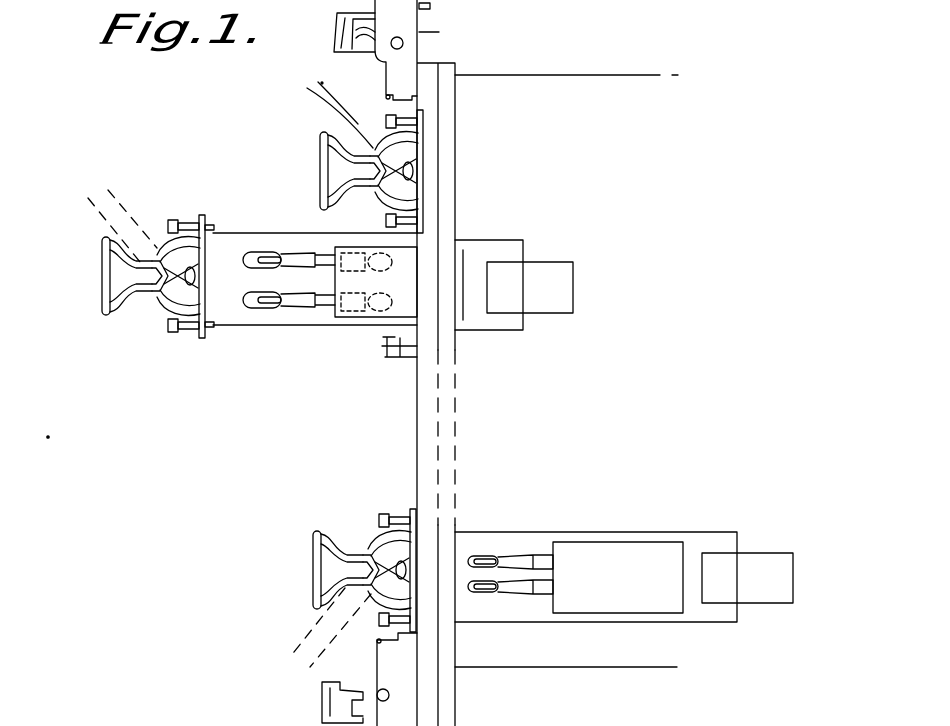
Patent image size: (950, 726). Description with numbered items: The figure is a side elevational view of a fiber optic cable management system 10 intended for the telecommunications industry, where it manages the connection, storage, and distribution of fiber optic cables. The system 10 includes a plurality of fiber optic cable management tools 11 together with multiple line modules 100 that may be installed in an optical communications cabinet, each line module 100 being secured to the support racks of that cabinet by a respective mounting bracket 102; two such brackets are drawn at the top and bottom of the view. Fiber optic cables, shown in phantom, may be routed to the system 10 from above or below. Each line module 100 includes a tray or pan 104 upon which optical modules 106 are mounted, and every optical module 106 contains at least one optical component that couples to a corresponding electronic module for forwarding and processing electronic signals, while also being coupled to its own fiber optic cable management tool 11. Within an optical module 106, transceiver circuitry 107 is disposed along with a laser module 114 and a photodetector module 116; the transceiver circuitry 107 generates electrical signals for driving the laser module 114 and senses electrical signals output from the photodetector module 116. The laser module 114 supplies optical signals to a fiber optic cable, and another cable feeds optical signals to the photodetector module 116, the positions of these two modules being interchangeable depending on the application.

The fiber optic cable management system 10 is at (227, 374).
The fiber optic cable management tool 11 is at (317, 178).
The line module 100 is at (500, 363).
The mounting bracket 102 is at (413, 33).
The tray or pan 104 is at (640, 50).
The optical module 106 is at (492, 238).
The transceiver circuitry 107 is at (592, 617).
The laser module 114 is at (412, 300).
The photodetector module 116 is at (543, 302).